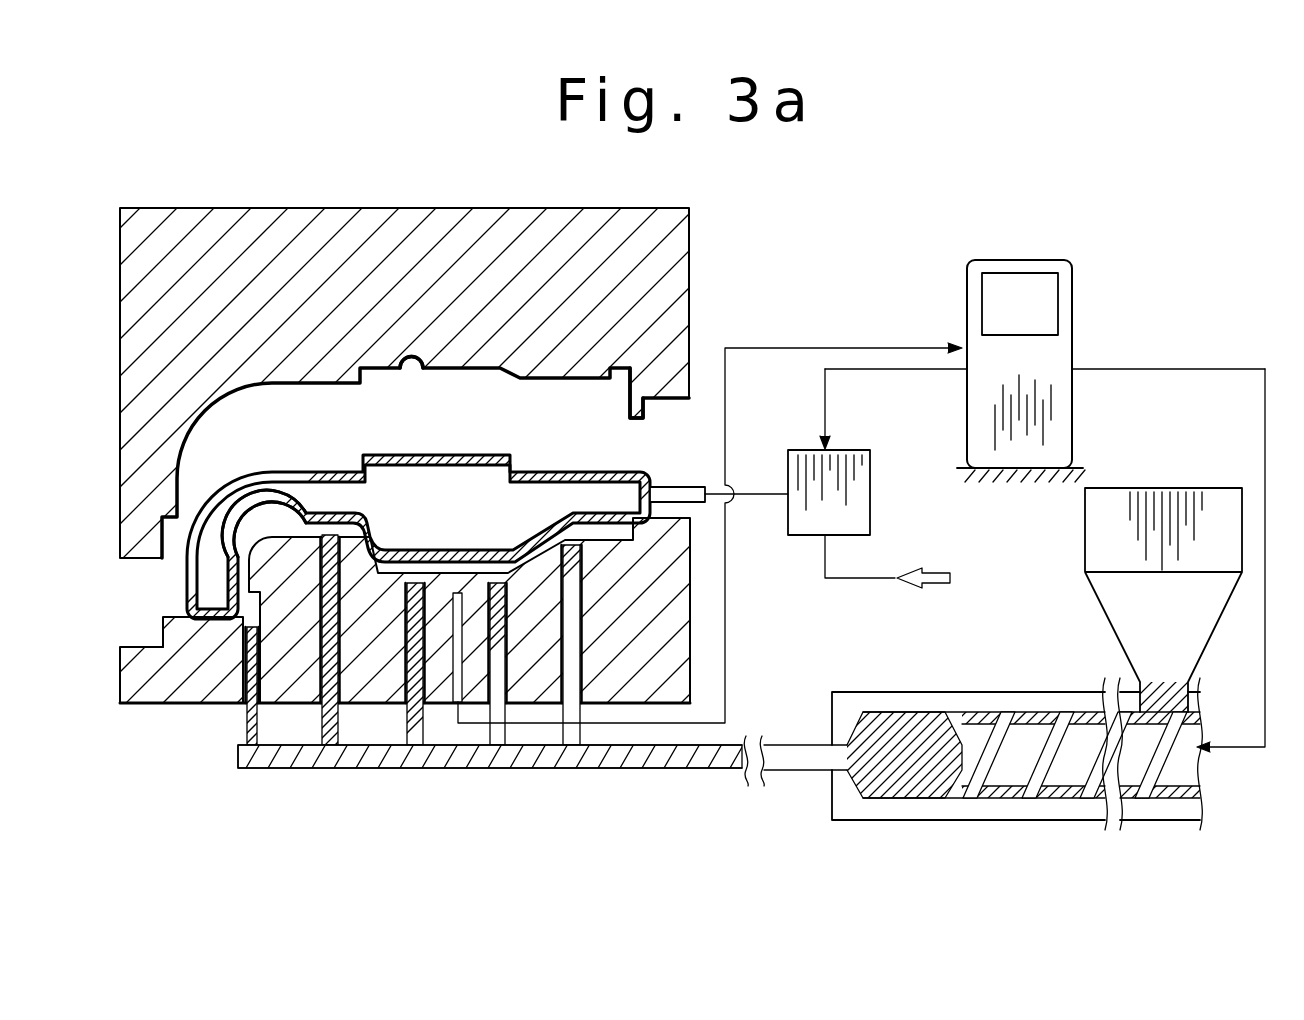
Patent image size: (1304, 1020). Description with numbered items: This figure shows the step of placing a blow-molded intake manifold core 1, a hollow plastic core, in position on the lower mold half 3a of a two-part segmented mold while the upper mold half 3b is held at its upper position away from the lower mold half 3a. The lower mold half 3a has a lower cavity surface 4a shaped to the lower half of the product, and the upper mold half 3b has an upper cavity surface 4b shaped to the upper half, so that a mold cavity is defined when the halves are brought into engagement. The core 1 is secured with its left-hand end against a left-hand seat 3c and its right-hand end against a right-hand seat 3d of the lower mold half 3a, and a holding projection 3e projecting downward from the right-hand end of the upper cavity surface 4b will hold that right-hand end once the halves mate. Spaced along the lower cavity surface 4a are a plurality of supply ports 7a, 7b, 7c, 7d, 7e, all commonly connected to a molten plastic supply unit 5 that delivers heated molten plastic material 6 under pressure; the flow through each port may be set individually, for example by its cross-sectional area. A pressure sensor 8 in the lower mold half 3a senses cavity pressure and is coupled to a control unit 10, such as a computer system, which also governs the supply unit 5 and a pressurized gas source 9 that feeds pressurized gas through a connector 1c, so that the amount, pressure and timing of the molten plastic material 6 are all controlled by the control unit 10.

The intake manifold core 1 is at (183, 579).
The connector 1c is at (683, 486).
The lower mold half 3a is at (140, 690).
The upper mold half 3b is at (165, 245).
The left-hand seat 3c is at (200, 655).
The right-hand seat 3d is at (652, 515).
The holding projection 3e is at (632, 410).
The lower cavity surface 4a is at (300, 533).
The upper cavity surface 4b is at (412, 372).
The molten plastic supply unit 5 is at (1180, 806).
The molten plastic material 6 is at (452, 760).
The supply port 7a is at (246, 680).
The supply port 7b is at (330, 695).
The supply port 7c is at (416, 667).
The supply port 7d is at (500, 678).
The supply port 7e is at (580, 675).
The pressure sensor 8 is at (458, 592).
The pressurized gas source 9 is at (812, 458).
The control unit 10 is at (985, 357).